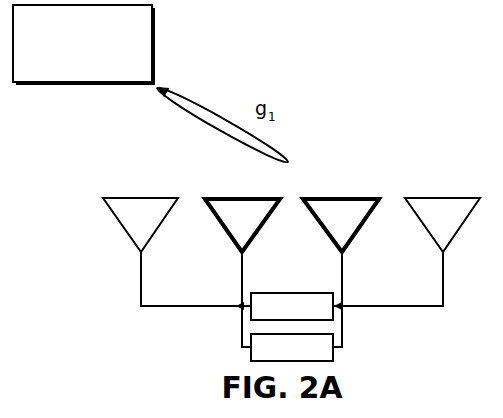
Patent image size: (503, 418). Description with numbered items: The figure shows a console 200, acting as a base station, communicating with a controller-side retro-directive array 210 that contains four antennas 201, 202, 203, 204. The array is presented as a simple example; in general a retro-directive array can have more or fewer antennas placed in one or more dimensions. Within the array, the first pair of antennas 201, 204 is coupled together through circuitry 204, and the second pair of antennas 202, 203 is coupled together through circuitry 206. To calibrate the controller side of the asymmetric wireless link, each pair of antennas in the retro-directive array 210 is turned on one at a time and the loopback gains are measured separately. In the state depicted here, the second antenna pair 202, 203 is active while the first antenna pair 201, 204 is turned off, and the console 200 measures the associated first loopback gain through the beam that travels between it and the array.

The console 200 is at (84, 45).
The antenna 201 is at (140, 213).
The antenna 202 is at (242, 213).
The antenna 203 is at (341, 213).
The antenna / circuitry 204 is at (365, 247).
The circuitry 206 is at (292, 347).
The retro-directive array 210 is at (171, 279).